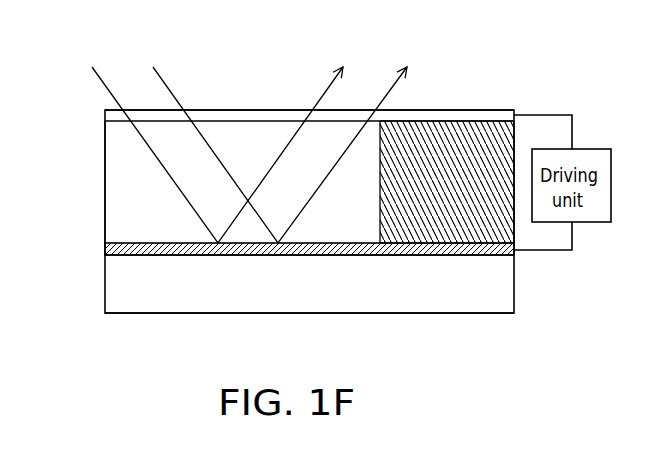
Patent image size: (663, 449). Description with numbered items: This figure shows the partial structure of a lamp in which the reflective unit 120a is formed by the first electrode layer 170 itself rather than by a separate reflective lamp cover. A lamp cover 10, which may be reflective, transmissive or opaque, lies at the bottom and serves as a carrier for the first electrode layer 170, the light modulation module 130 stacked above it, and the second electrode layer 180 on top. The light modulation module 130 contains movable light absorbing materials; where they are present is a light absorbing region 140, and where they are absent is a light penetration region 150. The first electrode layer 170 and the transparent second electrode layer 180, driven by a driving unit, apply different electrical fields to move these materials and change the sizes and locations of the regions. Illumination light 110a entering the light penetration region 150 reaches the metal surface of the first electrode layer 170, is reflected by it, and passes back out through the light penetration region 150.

The lamp cover 10 is at (113, 283).
The illumination light 110a is at (103, 80).
The reflective unit 120a is at (514, 250).
The light modulation module 130 is at (117, 185).
The light absorbing region 140 is at (480, 140).
The light penetration region 150 is at (243, 140).
The first electrode layer 170 is at (105, 250).
The second electrode layer 180 is at (105, 116).